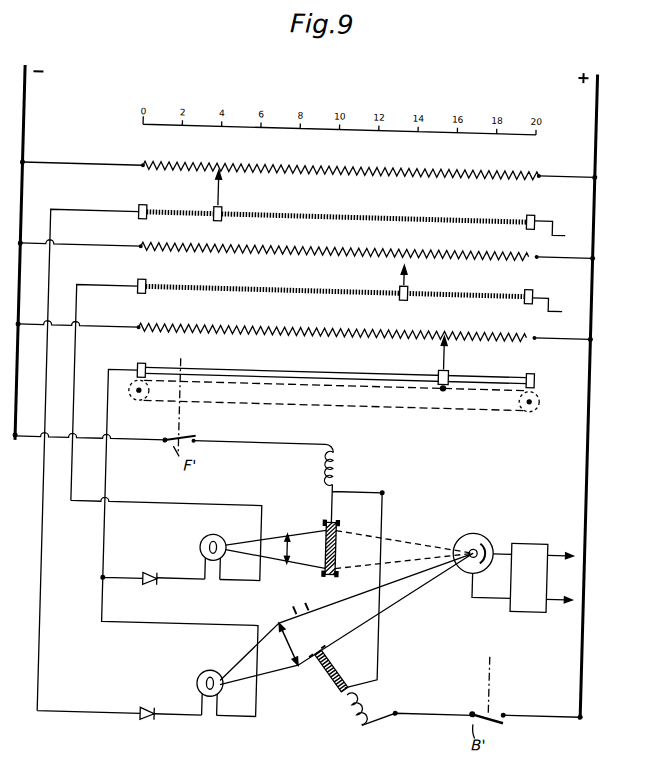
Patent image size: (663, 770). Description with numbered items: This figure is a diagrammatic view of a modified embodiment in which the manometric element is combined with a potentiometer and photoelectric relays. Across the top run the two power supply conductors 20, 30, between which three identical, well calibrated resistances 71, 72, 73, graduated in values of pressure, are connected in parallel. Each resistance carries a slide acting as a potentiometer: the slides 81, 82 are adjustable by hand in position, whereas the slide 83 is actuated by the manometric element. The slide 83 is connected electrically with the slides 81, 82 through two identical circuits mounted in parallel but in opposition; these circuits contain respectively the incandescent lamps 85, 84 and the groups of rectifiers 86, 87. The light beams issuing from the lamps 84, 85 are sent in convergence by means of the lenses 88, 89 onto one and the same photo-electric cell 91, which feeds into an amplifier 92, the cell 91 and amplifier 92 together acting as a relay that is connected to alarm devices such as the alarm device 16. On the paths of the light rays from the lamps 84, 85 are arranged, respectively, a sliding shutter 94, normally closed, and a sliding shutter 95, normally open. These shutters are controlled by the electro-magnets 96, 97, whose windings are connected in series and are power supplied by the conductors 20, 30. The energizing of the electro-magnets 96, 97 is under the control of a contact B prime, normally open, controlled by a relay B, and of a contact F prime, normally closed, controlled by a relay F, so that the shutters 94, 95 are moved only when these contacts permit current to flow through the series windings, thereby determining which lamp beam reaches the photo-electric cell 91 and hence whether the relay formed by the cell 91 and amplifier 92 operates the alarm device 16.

The power supply conductor 20 is at (597, 98).
The power supply conductor 30 is at (24, 114).
The resistance 71 is at (380, 164).
The resistance 72 is at (323, 243).
The resistance 73 is at (328, 324).
The slide 81 is at (224, 204).
The slide 82 is at (418, 282).
The slide 83 is at (457, 364).
The incandescent lamp 84 is at (211, 540).
The incandescent lamp 85 is at (214, 675).
The group of rectifiers 86 is at (158, 571).
The group of rectifiers 87 is at (155, 707).
The lens 88 is at (295, 539).
The lens 89 is at (303, 636).
The photo-electric cell 91 is at (483, 524).
The amplifier 92 is at (541, 527).
The sliding shutter 94 is at (348, 527).
The sliding shutter 95 is at (351, 661).
The electro-magnet 96 is at (350, 454).
The electro-magnet 97 is at (366, 706).
The alarm device 16 is at (560, 589).